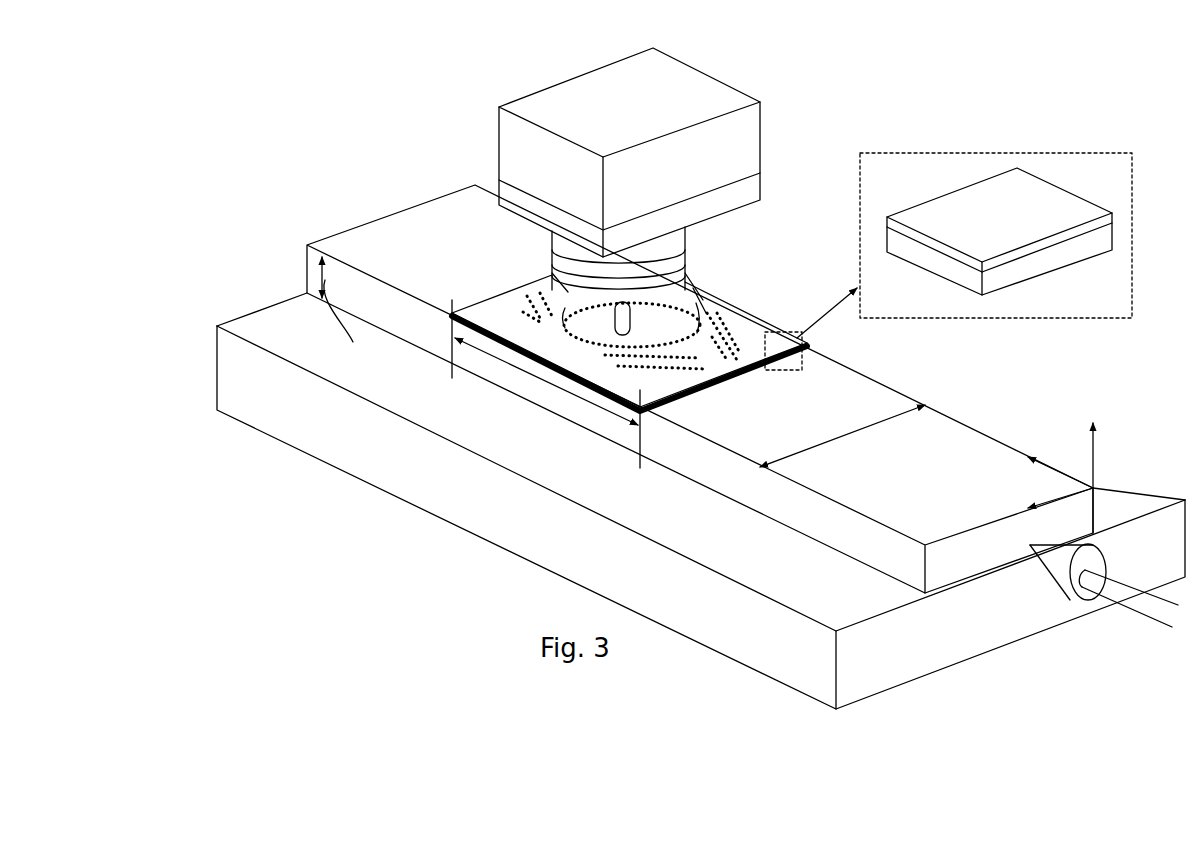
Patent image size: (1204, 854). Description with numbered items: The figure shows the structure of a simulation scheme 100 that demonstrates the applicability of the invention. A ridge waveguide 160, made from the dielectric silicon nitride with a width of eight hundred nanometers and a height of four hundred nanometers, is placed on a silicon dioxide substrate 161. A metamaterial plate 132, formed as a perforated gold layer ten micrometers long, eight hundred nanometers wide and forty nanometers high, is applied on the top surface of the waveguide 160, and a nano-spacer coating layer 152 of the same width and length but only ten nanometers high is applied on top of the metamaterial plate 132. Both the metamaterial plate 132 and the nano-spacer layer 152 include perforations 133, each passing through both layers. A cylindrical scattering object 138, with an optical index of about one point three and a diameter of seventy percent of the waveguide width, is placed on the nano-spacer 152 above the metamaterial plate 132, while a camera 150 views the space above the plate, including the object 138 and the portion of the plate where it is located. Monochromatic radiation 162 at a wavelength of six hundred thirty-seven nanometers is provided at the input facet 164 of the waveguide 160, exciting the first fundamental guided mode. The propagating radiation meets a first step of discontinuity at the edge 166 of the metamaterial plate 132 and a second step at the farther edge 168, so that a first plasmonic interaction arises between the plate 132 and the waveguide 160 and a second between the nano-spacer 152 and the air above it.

The simulation scheme 100 is at (350, 113).
The camera 150 is at (510, 157).
The nano-spacer coating layer 152 is at (993, 192).
The metamaterial plate 132 is at (752, 332).
The perforations 133 is at (700, 318).
The object 138 is at (614, 316).
The farther edge 168 is at (480, 300).
The edge 166 is at (710, 380).
The waveguide 160 is at (983, 448).
The substrate 161 is at (905, 658).
The monochromatic radiation 162 is at (1143, 604).
The input facet 164 is at (983, 563).